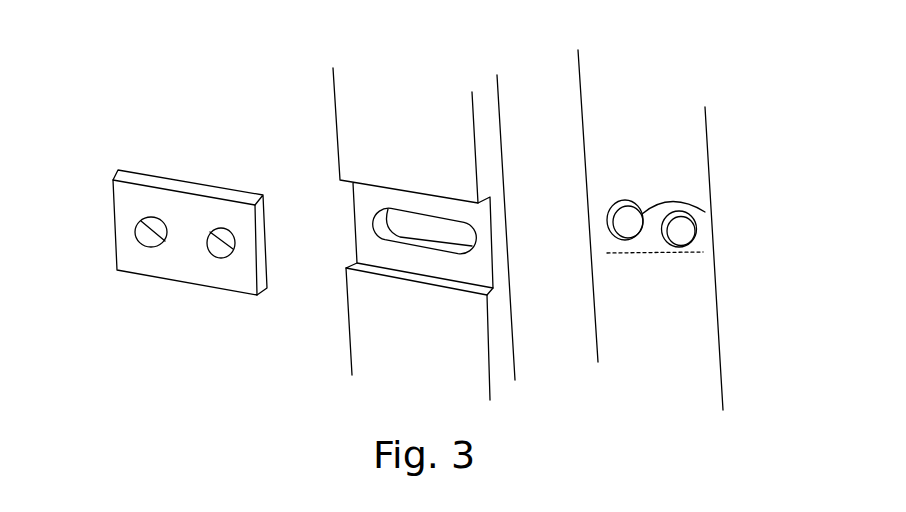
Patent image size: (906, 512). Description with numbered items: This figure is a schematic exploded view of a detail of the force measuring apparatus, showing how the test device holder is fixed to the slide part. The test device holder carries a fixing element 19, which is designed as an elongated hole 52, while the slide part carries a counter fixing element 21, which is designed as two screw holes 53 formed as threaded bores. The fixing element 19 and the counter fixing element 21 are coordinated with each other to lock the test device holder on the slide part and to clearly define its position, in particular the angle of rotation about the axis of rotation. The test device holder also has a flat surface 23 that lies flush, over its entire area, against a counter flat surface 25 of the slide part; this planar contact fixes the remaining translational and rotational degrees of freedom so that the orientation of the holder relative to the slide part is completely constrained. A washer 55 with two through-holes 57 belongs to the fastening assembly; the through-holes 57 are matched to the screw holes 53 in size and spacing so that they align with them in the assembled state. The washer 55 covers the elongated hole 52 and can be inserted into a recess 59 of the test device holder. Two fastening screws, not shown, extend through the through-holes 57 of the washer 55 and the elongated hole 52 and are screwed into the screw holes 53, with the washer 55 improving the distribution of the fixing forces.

The fixing element 19 is at (413, 178).
The elongated hole 52 is at (425, 210).
The counter fixing element 21 is at (653, 254).
The flat surface 23 is at (500, 113).
The counter flat surface 25 is at (693, 168).
The screw hole 53 is at (694, 218).
The washer 55 is at (112, 179).
The through-hole 57 is at (212, 256).
The recess 59 is at (355, 243).